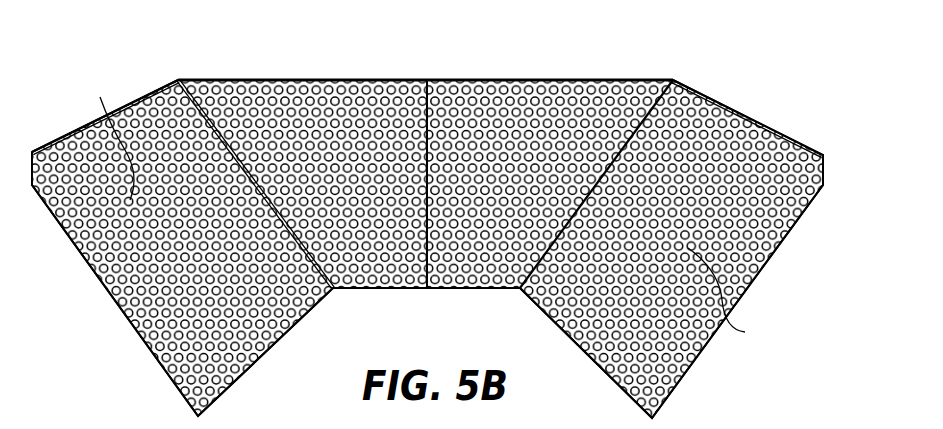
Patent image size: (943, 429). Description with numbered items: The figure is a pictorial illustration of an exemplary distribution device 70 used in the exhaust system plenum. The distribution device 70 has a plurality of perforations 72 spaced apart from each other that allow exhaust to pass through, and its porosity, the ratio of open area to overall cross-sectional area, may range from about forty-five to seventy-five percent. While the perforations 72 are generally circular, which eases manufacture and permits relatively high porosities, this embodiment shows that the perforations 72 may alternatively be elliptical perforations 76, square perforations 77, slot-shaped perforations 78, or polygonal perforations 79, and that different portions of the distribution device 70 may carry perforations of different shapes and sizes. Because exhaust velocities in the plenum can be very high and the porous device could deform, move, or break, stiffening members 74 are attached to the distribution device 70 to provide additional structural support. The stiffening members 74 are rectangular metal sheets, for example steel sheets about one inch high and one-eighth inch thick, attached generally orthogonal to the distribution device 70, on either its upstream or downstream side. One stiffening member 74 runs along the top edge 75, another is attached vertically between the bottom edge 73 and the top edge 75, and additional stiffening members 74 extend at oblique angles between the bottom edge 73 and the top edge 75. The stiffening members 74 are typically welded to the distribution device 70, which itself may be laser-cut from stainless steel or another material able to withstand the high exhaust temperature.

The distribution device 70 is at (227, 80).
The perforations 72 is at (350, 90).
The bottom edge 73 is at (388, 289).
The stiffening members 74 is at (180, 80).
The top edge 75 is at (288, 80).
The elliptical perforations 76 is at (78, 173).
The square perforations 77 is at (111, 137).
The slot-shaped perforations 78 is at (675, 343).
The polygonal perforations 79 is at (727, 296).